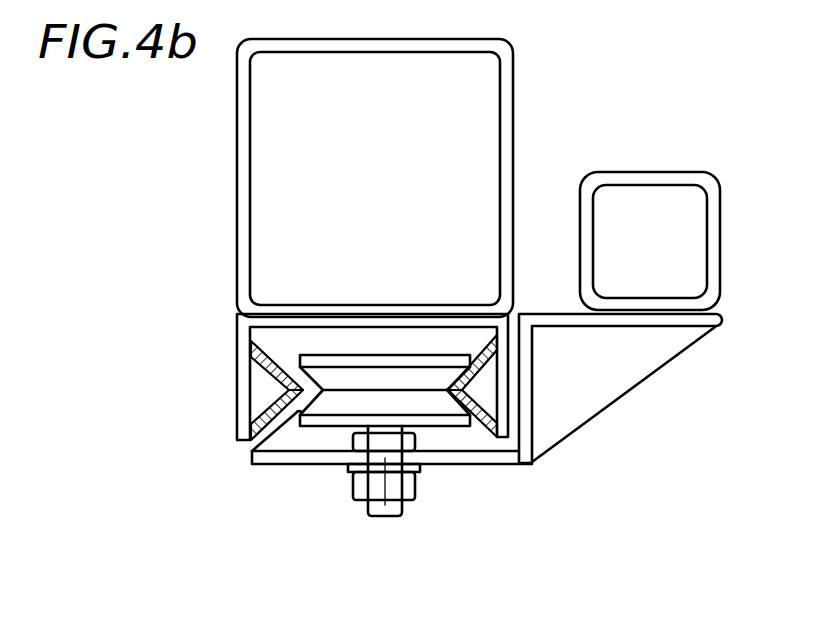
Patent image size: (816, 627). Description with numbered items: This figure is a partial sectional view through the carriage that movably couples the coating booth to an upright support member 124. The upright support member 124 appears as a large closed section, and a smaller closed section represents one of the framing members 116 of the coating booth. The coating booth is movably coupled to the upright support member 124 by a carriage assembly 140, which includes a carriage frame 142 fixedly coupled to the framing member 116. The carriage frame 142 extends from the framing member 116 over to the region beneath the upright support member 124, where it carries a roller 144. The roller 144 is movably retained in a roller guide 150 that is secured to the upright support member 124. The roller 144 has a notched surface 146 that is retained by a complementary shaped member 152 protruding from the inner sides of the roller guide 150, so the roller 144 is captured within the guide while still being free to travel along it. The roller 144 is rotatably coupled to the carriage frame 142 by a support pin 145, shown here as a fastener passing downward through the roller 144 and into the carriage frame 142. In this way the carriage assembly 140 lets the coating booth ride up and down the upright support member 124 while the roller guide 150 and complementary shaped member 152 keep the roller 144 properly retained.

The framing member 116 is at (657, 172).
The upright support member 124 is at (237, 143).
The carriage assembly 140 is at (140, 426).
The carriage frame 142 is at (532, 390).
The roller 144 is at (433, 407).
The support pin 145 is at (367, 511).
The notched surface 146 is at (252, 455).
The roller guide 150 is at (237, 350).
The complementary shaped member 152 is at (272, 376).